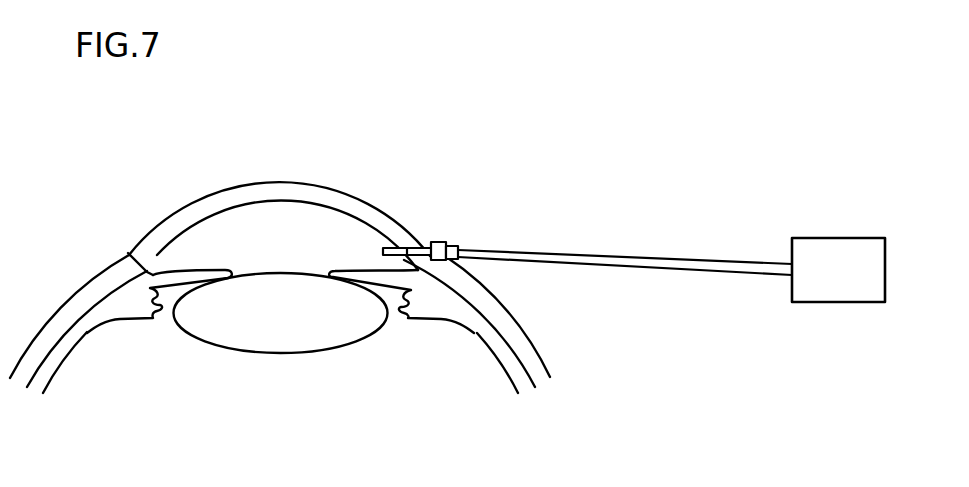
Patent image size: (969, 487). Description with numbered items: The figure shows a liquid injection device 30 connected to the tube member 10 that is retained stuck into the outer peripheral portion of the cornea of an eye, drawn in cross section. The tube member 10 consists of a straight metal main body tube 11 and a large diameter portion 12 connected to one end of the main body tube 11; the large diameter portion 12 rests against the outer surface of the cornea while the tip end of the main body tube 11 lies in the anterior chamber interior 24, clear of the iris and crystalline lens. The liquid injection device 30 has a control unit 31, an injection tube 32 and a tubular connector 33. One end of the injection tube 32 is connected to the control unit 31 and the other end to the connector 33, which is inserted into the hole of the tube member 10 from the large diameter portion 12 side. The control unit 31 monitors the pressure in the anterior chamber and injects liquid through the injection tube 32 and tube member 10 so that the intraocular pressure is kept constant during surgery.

The tube member 10 is at (447, 184).
The main body tube 11 is at (409, 243).
The large diameter portion 12 is at (439, 242).
The anterior chamber interior 24 is at (262, 223).
The liquid injection device 30 is at (745, 222).
The control unit 31 is at (830, 247).
The injection tube 32 is at (622, 257).
The connector 33 is at (458, 259).